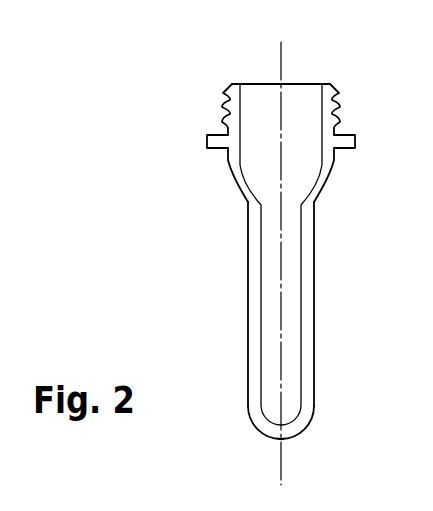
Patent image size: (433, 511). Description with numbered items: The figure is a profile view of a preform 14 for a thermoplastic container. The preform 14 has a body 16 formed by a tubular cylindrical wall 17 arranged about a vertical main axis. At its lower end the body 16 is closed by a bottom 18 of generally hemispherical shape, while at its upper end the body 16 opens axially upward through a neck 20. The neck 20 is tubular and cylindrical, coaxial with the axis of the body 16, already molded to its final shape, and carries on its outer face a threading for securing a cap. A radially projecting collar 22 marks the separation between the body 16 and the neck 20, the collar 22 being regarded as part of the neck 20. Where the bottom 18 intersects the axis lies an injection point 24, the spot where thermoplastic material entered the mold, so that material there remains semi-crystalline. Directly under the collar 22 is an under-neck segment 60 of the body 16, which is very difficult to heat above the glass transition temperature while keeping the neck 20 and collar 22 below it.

The preform 14 is at (274, 282).
The body 16 is at (188, 148).
The tubular cylindrical wall 17 is at (307, 327).
The bottom 18 is at (292, 427).
The neck 20 is at (188, 77).
The collar 22 is at (350, 140).
The injection point 24 is at (280, 438).
The under-neck segment 60 is at (352, 152).